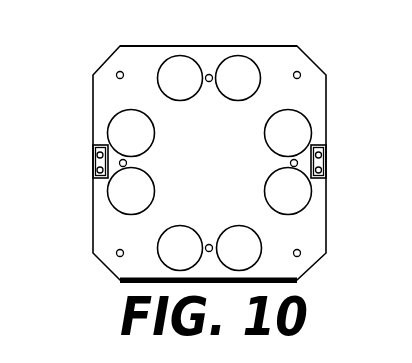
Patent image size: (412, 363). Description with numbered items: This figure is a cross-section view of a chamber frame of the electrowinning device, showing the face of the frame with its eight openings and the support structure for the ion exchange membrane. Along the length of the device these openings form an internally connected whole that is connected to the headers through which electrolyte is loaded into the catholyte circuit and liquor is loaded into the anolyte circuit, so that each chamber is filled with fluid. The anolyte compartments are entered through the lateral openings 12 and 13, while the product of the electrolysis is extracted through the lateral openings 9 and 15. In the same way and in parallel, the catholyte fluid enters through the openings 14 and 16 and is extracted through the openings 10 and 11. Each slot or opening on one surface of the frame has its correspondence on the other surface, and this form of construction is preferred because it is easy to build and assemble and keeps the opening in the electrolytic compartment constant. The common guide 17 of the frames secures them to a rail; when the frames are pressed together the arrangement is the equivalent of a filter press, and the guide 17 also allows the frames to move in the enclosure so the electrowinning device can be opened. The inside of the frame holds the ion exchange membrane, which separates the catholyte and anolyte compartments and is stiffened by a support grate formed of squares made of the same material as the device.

The lateral opening 9 is at (118, 98).
The opening 10 is at (150, 72).
The opening 11 is at (268, 72).
The lateral opening 12 is at (300, 98).
The lateral opening 13 is at (300, 217).
The opening 14 is at (268, 250).
The lateral opening 15 is at (118, 217).
The opening 16 is at (150, 250).
The common guide 17 is at (93, 162).